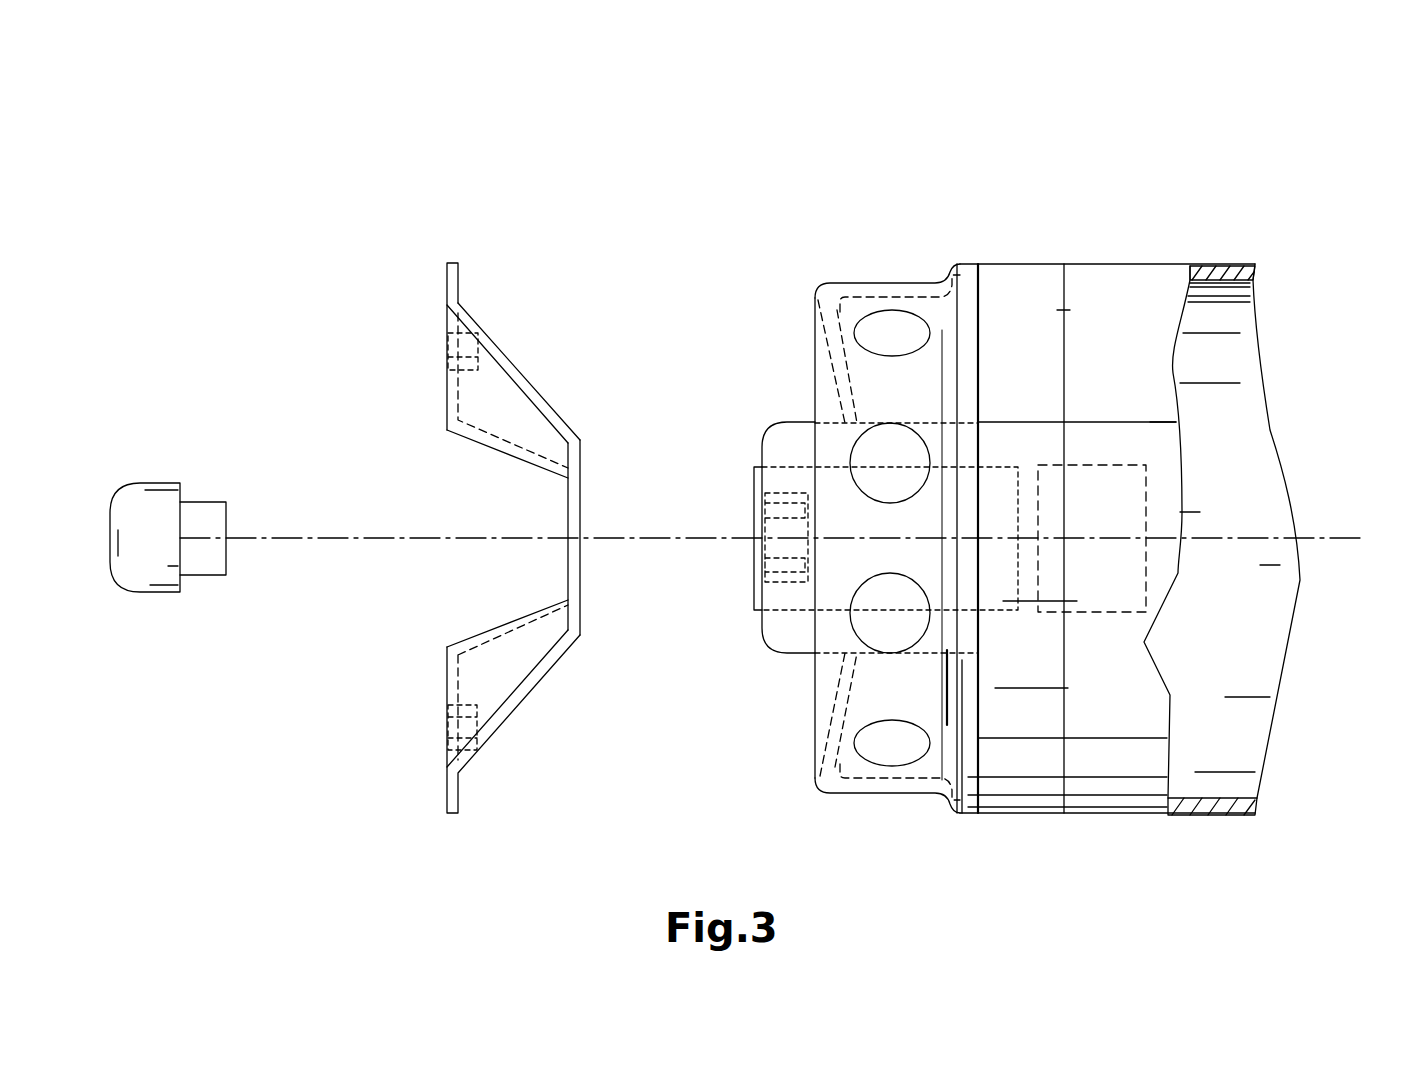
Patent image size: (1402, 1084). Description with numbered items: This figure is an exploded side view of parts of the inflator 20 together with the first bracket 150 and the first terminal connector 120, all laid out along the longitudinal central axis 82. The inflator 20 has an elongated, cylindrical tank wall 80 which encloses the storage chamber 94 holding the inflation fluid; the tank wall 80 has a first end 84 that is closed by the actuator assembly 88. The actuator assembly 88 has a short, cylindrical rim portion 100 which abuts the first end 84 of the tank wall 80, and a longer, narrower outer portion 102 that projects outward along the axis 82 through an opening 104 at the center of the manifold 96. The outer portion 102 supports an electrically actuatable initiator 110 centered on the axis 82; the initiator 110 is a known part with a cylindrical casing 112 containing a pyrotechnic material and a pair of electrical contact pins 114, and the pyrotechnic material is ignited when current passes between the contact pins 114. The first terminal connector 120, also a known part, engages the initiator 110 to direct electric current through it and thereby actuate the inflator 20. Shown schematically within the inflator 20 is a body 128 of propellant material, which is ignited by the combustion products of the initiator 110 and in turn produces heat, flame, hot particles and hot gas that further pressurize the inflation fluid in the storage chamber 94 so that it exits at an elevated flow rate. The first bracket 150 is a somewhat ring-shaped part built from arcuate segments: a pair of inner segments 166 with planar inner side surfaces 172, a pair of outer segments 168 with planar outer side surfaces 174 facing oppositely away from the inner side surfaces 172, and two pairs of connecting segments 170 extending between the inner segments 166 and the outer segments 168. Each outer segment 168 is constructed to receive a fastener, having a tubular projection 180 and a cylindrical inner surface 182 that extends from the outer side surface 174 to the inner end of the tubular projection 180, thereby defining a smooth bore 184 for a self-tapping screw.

The inflator 20 is at (846, 145).
The tank wall 80 is at (1230, 270).
The longitudinal central axis 82 is at (1345, 538).
The first end 84 is at (1060, 757).
The actuator assembly 88 is at (1005, 262).
The storage chamber 94 is at (1254, 514).
The manifold 96 is at (880, 282).
The rim portion 100 is at (1017, 760).
The outer portion 102 is at (767, 435).
The opening 104 is at (837, 445).
The initiator 110 is at (752, 512).
The casing 112 is at (795, 610).
The electrical contact pins 114 is at (777, 513).
The first terminal connector 120 is at (140, 475).
The body of propellant material 128 is at (1095, 463).
The first bracket 150 is at (497, 487).
The inner segments 166 is at (575, 508).
The outer segments 168 is at (448, 263).
The connecting segments 170 is at (500, 410).
The inner side surface 172 is at (580, 553).
The outer side surface 174 is at (447, 305).
The tubular projection 180 is at (468, 308).
The cylindrical inner surface 182 is at (492, 337).
The bore 184 is at (440, 350).